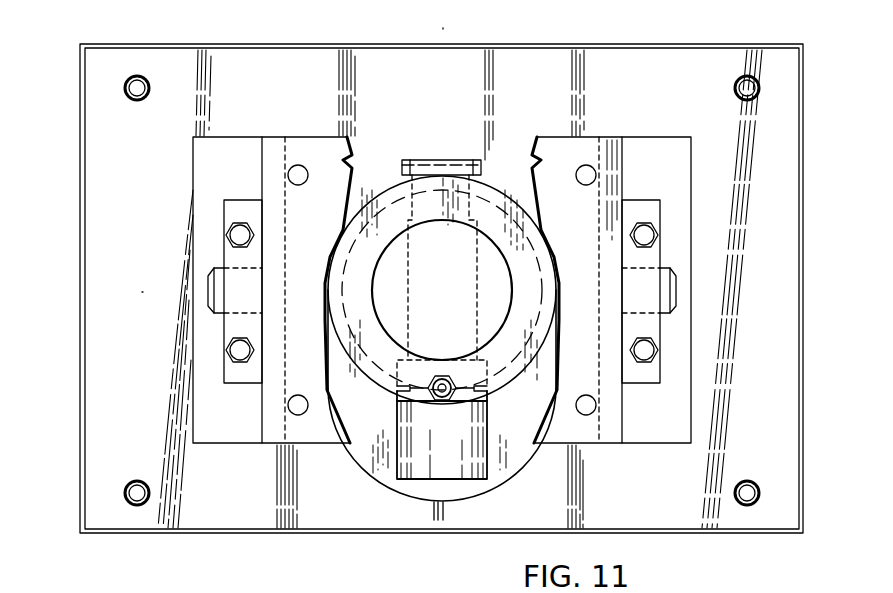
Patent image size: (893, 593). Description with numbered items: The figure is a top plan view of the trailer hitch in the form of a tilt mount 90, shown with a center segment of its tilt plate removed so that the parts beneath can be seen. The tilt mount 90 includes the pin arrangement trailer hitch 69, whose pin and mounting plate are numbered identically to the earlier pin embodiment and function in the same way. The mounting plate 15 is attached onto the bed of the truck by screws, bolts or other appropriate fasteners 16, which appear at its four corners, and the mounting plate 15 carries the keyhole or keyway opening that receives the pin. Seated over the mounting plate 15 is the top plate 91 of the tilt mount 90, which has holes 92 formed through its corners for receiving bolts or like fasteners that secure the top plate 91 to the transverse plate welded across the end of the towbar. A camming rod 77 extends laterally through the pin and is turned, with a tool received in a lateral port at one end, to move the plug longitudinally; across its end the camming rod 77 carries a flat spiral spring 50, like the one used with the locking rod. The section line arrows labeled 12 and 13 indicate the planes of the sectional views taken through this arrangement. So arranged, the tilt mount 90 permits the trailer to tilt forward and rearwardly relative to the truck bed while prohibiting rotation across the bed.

The section line 12- 12 is at (172, 292).
The section line 13- 13 is at (396, 294).
The mounting plate 15 is at (423, 98).
The fasteners 16 is at (125, 92).
The flat spiral spring 50 is at (457, 160).
The pin arrangement trailer hitch 69 is at (376, 408).
The camming rod 77 is at (468, 463).
The tilt mount 90 is at (561, 115).
The top plate 91 is at (587, 202).
The holes 92 is at (301, 167).